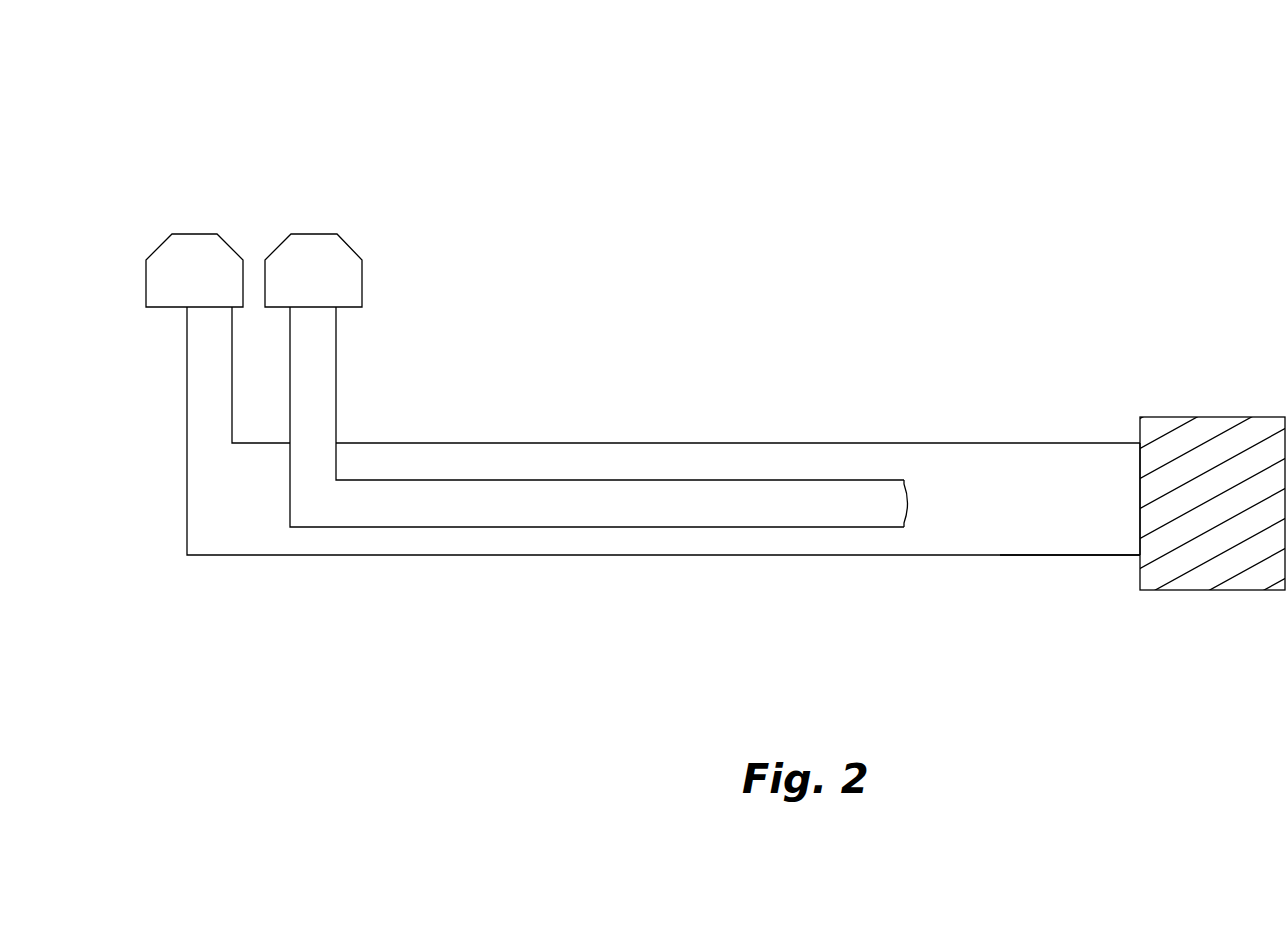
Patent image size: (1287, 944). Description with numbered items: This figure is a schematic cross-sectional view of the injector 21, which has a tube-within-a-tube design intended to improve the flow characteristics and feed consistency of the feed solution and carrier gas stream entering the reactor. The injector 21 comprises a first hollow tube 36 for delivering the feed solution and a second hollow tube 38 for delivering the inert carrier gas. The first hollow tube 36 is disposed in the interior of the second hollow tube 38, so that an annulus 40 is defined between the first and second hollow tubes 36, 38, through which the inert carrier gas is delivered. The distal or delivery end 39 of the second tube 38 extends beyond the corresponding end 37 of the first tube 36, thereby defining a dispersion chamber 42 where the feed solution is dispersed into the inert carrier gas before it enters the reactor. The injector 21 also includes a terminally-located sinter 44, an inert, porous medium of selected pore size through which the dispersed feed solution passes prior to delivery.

The injector 21 is at (613, 140).
The first hollow tube 36 is at (520, 507).
The end of the first tube 37 is at (907, 517).
The second hollow tube 38 is at (763, 443).
The distal or delivery end 39 is at (1140, 443).
The annulus 40 is at (688, 538).
The dispersion chamber 42 is at (1073, 495).
The sinter 44 is at (1220, 417).